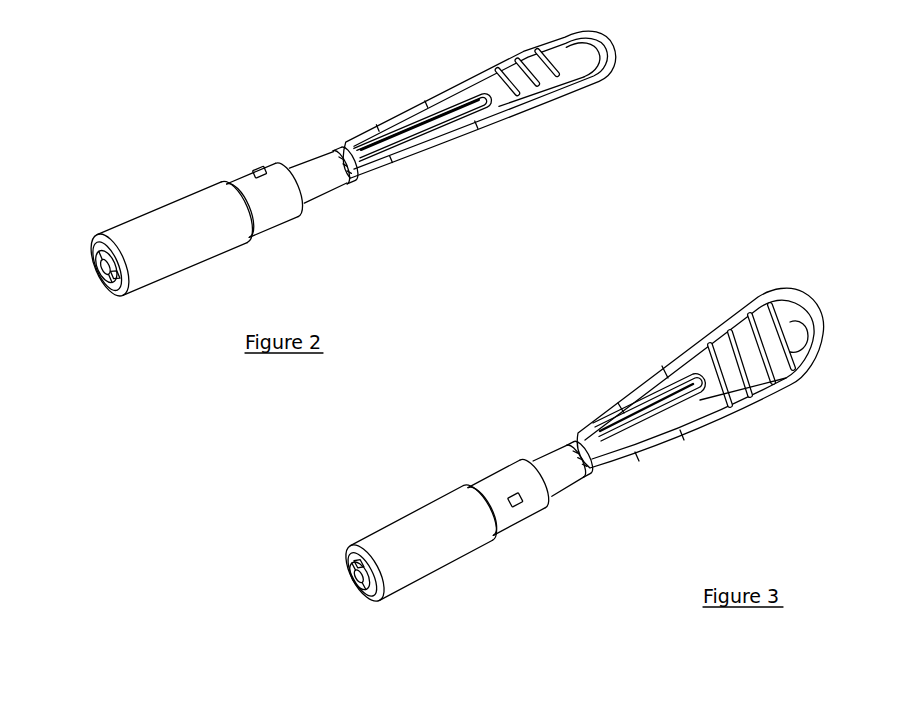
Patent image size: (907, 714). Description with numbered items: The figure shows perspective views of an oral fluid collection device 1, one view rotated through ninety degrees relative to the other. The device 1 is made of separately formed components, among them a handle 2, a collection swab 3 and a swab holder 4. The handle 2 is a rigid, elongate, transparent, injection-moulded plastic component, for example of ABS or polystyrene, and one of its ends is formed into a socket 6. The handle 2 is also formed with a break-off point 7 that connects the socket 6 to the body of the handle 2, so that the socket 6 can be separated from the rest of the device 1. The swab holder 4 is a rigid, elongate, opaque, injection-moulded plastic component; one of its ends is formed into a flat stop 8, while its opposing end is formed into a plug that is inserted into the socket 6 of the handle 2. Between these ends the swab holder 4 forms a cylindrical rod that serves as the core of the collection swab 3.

In FIG. 2, the oral fluid collection device 1 is at (244, 97).
In FIG. 3, the oral fluid collection device 1 is at (512, 380).
In FIG. 2, the handle 2 is at (459, 158).
In FIG. 3, the handle 2 is at (654, 460).
In FIG. 2, the collection swab 3 is at (162, 217).
In FIG. 3, the collection swab 3 is at (400, 536).
In FIG. 2, the swab holder 4 is at (122, 290).
In FIG. 3, the swab holder 4 is at (341, 550).
In FIG. 2, the socket 6 is at (280, 208).
In FIG. 3, the socket 6 is at (504, 517).
In FIG. 2, the break-off point 7 is at (343, 162).
In FIG. 3, the break-off point 7 is at (572, 440).
In FIG. 2, the flat stop 8 is at (100, 273).
In FIG. 3, the flat stop 8 is at (355, 572).